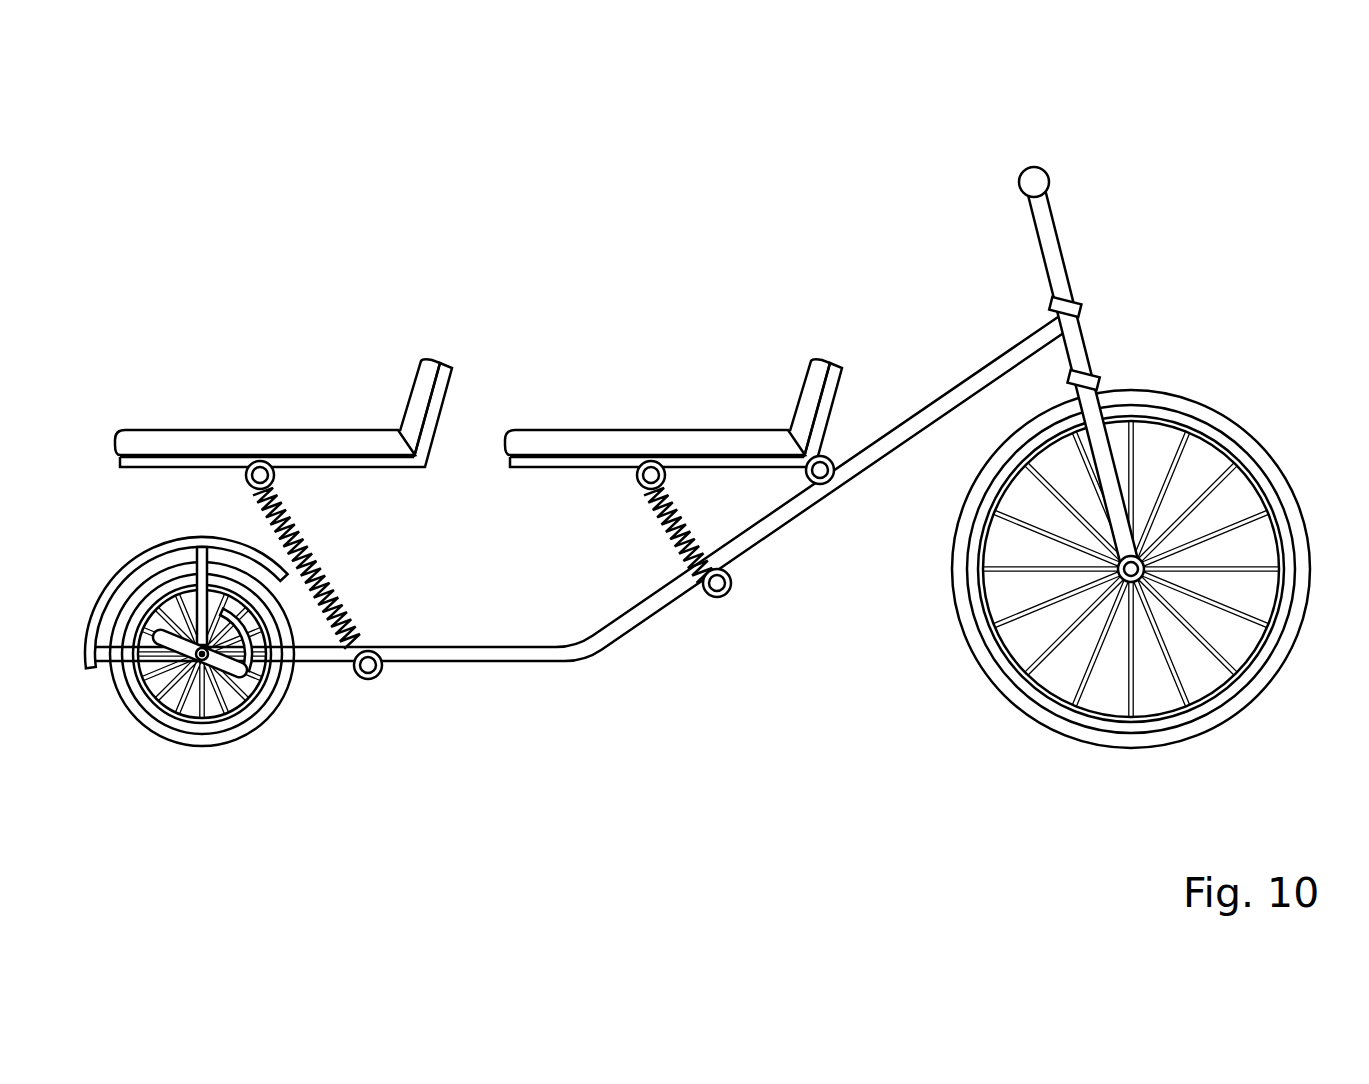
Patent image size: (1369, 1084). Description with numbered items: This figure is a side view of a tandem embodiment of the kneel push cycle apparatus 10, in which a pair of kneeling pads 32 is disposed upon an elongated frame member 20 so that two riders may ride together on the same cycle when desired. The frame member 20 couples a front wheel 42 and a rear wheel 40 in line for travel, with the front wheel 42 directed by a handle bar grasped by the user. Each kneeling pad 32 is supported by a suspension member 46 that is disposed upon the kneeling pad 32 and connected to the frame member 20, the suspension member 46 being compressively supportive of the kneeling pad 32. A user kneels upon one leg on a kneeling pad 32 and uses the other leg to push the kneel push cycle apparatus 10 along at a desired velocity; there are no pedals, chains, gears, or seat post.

The kneel push cycle apparatus 10 is at (1167, 131).
The frame member 20 is at (507, 662).
The kneeling pad 32 is at (263, 407).
The rear wheel 40 is at (253, 730).
The front wheel 42 is at (1103, 748).
The suspension member 46 is at (313, 553).